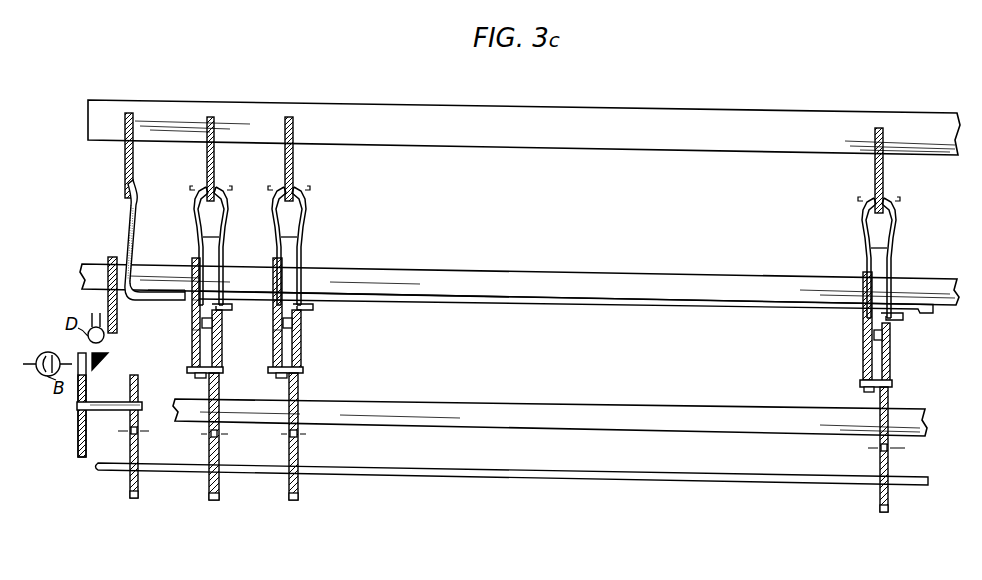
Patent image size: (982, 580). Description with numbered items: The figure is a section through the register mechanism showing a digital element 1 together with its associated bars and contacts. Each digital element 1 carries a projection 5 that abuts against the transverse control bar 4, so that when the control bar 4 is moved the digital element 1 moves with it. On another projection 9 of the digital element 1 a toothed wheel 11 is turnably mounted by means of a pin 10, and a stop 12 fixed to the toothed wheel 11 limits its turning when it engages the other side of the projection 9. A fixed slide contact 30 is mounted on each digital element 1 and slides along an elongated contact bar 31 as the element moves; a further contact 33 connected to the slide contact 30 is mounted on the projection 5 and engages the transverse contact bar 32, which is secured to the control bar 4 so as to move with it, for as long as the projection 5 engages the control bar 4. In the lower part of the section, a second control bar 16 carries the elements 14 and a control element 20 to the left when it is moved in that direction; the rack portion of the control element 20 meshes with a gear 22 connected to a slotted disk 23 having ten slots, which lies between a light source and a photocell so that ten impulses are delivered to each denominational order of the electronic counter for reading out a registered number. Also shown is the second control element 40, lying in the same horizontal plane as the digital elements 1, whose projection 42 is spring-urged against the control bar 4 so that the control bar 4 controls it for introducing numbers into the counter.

The digital element 1 is at (192, 316).
The transverse control bar 4 is at (500, 280).
The projection 5 is at (193, 262).
The projection 9 is at (192, 358).
The pin 10 is at (200, 377).
The toothed wheel 11 is at (222, 350).
The stop 12 is at (201, 337).
The element 14 is at (219, 486).
The control bar 16 is at (530, 414).
The control element 20 is at (139, 492).
The gear 22 is at (130, 385).
The slotted disk 23 is at (86, 441).
The slide contact 30 is at (221, 208).
The contact bar 31 is at (214, 162).
The contact bar 32 is at (618, 300).
The contact 33 is at (222, 308).
The second control element 40 is at (108, 298).
The projection 42 is at (110, 263).